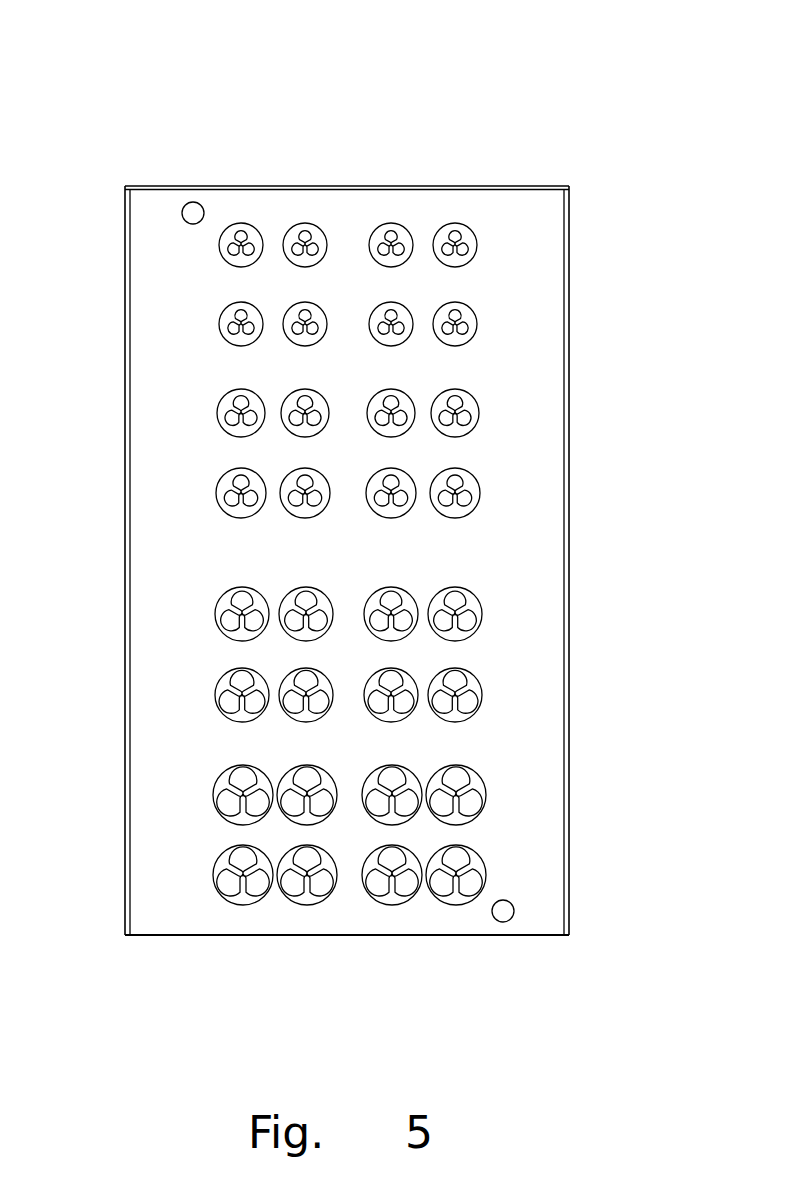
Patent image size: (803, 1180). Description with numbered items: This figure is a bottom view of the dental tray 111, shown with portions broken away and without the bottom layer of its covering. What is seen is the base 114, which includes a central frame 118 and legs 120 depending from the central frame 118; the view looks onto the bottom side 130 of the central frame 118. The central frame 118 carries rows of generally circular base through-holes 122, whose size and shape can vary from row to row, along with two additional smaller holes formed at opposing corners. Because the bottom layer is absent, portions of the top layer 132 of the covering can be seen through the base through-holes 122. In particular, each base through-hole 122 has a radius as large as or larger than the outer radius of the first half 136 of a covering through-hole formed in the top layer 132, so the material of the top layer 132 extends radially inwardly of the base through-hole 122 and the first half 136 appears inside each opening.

The dental tray 111 is at (200, 139).
The base 114 is at (345, 618).
The central frame 118 is at (193, 938).
The legs 120 is at (125, 278).
The base through-holes 122 is at (478, 495).
The bottom side 130 is at (419, 222).
The top layer 132 is at (476, 419).
The first half 136 is at (458, 672).